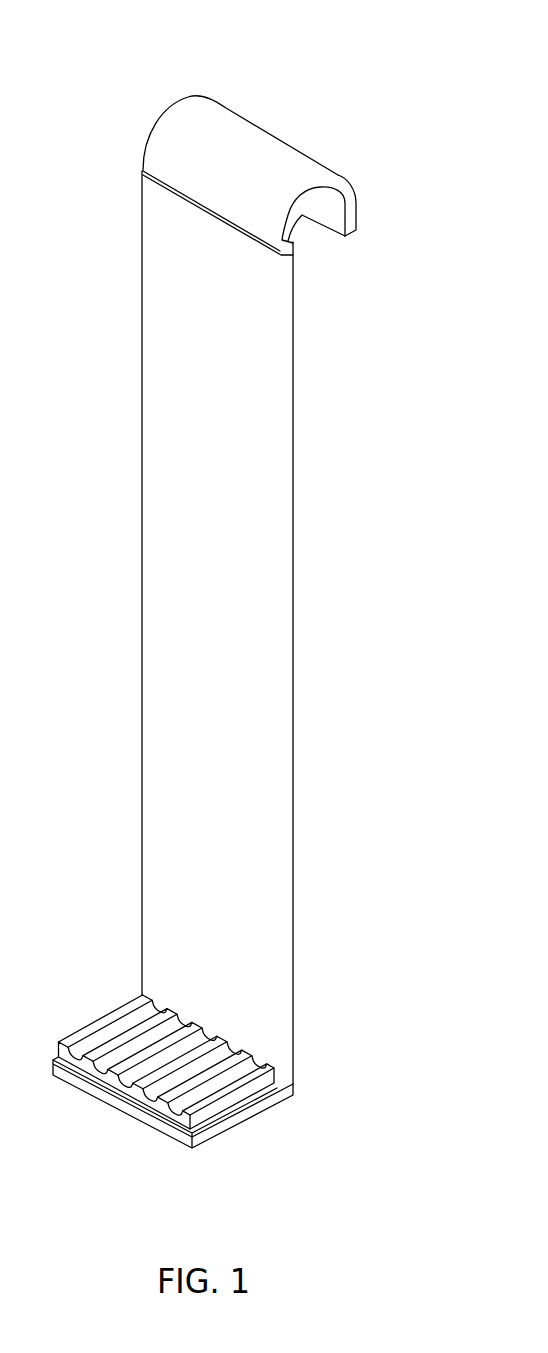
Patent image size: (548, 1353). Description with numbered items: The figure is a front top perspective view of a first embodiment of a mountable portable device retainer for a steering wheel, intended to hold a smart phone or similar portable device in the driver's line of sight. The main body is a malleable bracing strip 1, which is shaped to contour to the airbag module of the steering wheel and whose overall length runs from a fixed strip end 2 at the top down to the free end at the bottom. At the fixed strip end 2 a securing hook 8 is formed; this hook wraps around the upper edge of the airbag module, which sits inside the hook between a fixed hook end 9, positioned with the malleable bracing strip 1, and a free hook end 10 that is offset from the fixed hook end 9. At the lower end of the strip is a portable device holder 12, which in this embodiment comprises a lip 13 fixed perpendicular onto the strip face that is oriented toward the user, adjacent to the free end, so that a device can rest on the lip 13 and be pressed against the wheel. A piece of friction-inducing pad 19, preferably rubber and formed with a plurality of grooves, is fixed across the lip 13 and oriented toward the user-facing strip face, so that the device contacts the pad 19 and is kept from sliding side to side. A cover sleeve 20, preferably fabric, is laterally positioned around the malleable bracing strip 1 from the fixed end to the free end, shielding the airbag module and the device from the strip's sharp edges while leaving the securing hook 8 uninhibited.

The malleable bracing strip 1 is at (144, 131).
The fixed strip end 2 is at (142, 171).
The securing hook 8 is at (252, 92).
The fixed hook end 9 is at (290, 237).
The free hook end 10 is at (356, 230).
The portable device holder 12 is at (262, 1144).
The lip 13 is at (273, 1103).
The friction-inducing pad 19 is at (68, 1024).
The cover sleeve 20 is at (129, 642).